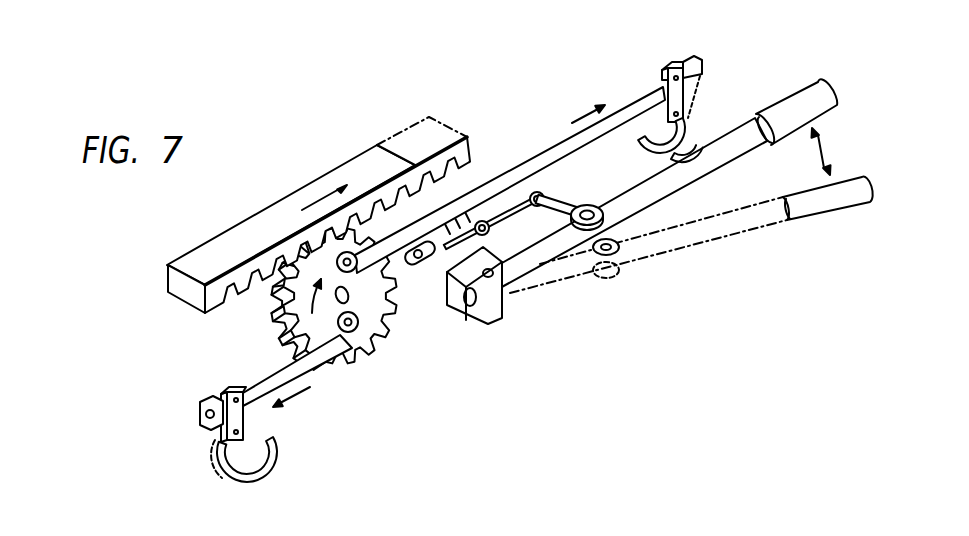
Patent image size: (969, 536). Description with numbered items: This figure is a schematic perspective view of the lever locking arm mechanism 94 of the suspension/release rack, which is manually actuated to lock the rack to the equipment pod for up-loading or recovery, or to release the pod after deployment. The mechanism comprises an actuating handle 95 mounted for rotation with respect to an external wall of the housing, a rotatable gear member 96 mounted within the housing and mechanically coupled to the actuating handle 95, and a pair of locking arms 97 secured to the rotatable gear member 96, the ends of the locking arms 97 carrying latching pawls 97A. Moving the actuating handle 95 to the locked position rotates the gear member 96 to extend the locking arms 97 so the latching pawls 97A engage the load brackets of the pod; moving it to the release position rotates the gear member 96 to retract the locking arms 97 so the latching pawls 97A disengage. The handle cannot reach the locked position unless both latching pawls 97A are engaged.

The lever locking arm mechanism 94 is at (105, 299).
The actuating handle 95 is at (815, 98).
The rotatable gear member 96 is at (307, 322).
The locking arms 97 is at (563, 147).
The latching pawls 97A is at (695, 65).